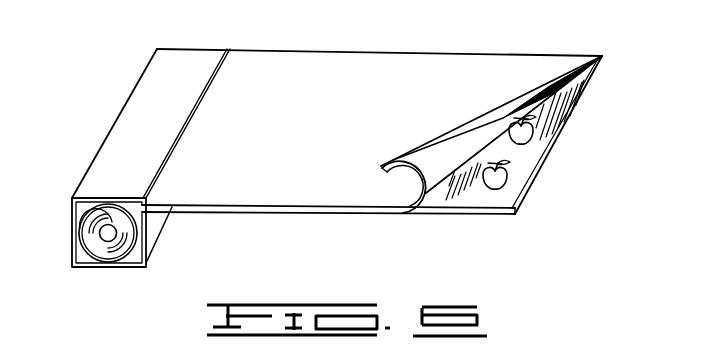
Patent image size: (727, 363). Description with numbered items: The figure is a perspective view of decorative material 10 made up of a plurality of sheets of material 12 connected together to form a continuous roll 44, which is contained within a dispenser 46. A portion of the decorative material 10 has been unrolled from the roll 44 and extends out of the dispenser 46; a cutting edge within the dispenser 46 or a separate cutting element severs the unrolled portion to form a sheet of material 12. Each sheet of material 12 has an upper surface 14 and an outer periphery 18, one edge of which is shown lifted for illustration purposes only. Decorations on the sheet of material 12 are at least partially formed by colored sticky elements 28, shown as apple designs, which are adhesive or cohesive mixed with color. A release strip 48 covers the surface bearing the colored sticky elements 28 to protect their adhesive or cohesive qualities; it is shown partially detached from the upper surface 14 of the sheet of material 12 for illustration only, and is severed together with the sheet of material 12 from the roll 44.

The decorative material 10 is at (348, 44).
The sheet of material 12 is at (532, 182).
The upper surface 14 is at (498, 200).
The outer periphery 18 is at (580, 100).
The colored sticky elements 28 is at (503, 170).
The roll 44 is at (118, 243).
The dispenser 46 is at (185, 47).
The release strip 48 is at (493, 68).